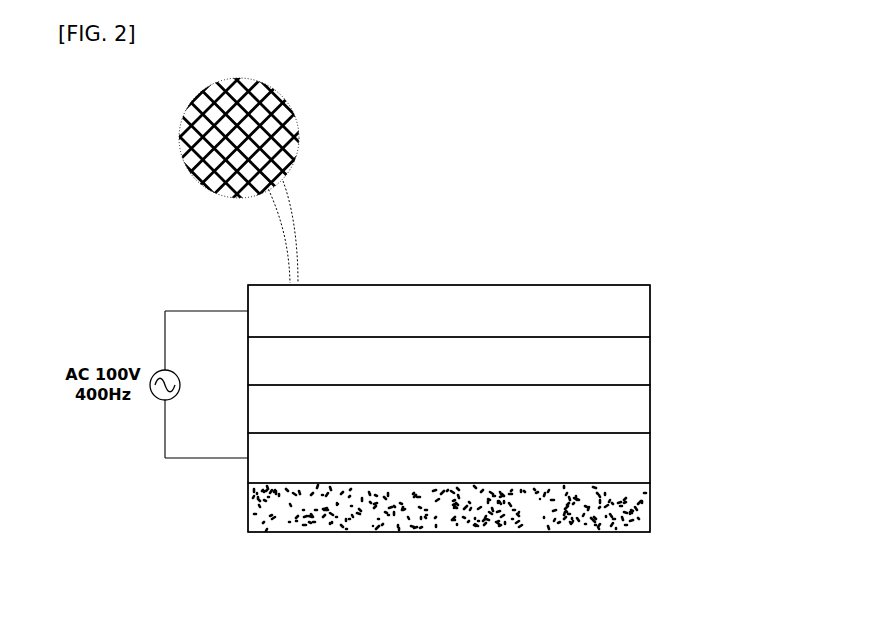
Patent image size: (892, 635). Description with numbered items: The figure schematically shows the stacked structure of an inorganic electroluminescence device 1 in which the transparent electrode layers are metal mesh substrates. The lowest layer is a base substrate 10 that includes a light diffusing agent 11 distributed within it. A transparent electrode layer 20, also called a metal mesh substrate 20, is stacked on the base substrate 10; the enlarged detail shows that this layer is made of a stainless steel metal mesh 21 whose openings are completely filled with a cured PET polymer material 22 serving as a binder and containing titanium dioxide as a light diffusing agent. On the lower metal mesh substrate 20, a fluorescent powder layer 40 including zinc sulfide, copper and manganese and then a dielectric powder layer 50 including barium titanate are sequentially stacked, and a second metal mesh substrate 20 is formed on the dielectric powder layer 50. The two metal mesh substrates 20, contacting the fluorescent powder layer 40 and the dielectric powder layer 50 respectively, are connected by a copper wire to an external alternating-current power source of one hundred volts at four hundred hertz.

The inorganic electroluminescence device 1 is at (537, 258).
The base substrate 10 is at (652, 509).
The light diffusing agent 11 is at (585, 533).
The transparent electrode layer (metal mesh substrate) 20 is at (652, 312).
The metal mesh 21 is at (281, 141).
The PET polymer material (binder) 22 is at (278, 104).
The fluorescent powder layer 40 is at (652, 410).
The dielectric powder layer 50 is at (652, 362).